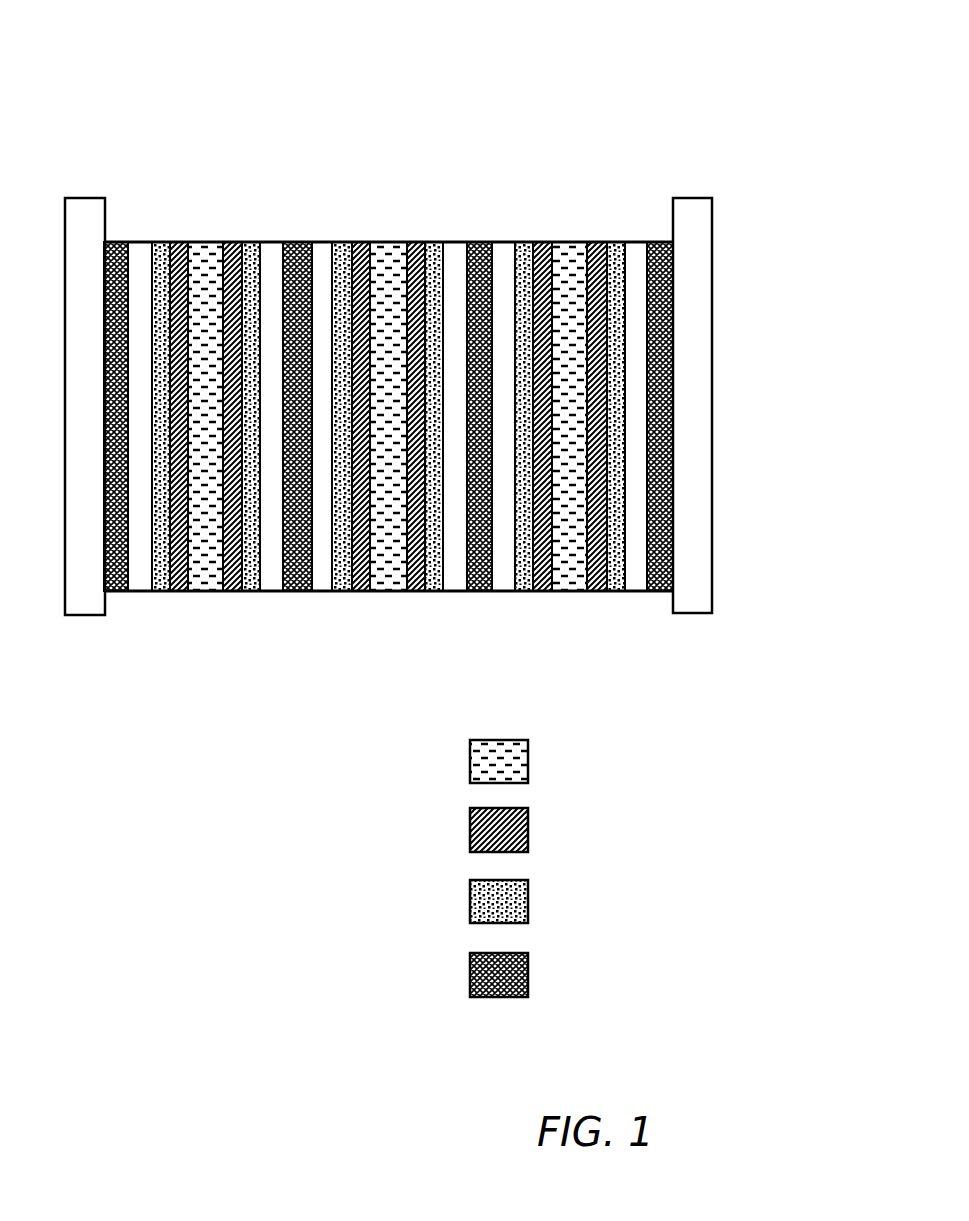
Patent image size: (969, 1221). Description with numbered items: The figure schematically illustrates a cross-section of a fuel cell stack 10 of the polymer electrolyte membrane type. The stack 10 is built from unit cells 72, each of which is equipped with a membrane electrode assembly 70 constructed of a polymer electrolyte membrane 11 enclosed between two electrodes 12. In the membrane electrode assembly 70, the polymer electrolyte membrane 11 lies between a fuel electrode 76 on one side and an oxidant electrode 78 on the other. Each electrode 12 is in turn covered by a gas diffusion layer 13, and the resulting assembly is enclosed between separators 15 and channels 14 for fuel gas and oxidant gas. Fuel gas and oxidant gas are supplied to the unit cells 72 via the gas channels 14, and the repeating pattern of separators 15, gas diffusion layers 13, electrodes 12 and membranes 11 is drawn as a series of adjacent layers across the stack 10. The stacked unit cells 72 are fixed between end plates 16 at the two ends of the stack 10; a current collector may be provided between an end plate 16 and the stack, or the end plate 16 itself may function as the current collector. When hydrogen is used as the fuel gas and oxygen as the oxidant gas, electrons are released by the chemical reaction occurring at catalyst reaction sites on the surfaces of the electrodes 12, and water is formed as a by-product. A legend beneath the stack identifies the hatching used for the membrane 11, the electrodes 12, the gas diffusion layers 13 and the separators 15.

The fuel cell stack 10 is at (745, 240).
The polymer electrolyte membrane 11 is at (387, 512).
The electrode 12 is at (388, 547).
The gas diffusion layer 13 is at (388, 582).
The gas channel 14 is at (255, 599).
The separator 15 is at (388, 619).
The end plate 16 is at (121, 201).
The membrane electrode assembly 70 is at (170, 242).
The unit cell 72 is at (673, 240).
The fuel electrode 76 is at (595, 591).
The oxidant electrode 78 is at (538, 591).